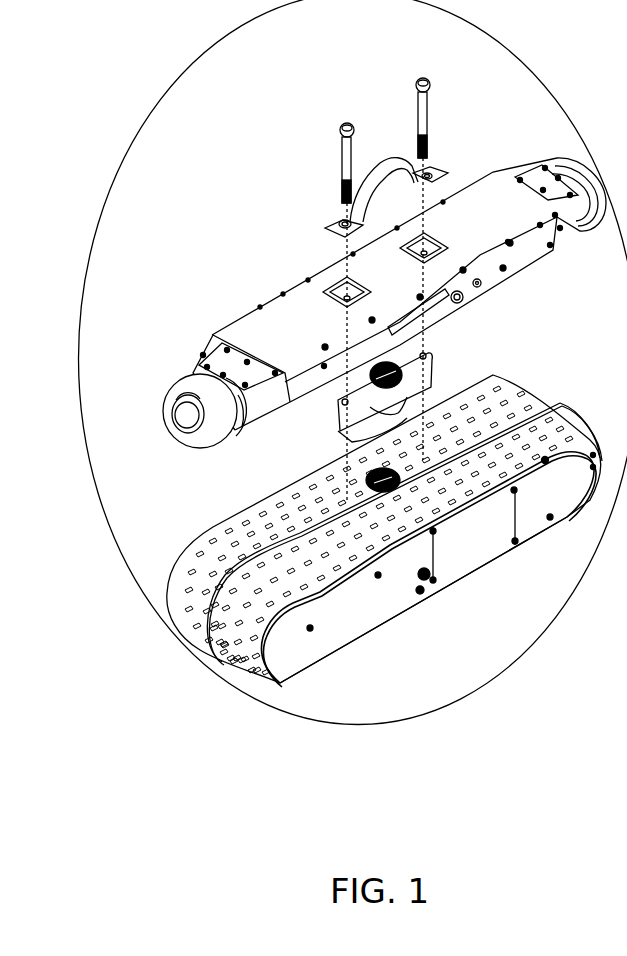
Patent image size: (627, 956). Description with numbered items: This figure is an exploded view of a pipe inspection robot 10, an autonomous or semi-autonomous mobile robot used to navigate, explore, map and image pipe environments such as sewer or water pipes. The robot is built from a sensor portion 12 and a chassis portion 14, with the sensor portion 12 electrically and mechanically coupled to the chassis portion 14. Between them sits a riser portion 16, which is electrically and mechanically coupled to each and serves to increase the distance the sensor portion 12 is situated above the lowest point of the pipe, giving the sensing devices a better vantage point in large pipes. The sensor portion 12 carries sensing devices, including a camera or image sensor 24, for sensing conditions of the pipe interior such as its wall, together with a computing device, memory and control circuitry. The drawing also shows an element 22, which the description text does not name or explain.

The pipe inspection robot 10 is at (121, 148).
The sensor portion 12 is at (285, 327).
The chassis portion 14 is at (296, 631).
The riser portion 16 is at (430, 366).
The abrasive belt 22 is at (257, 522).
The camera or image sensor 24 is at (183, 418).